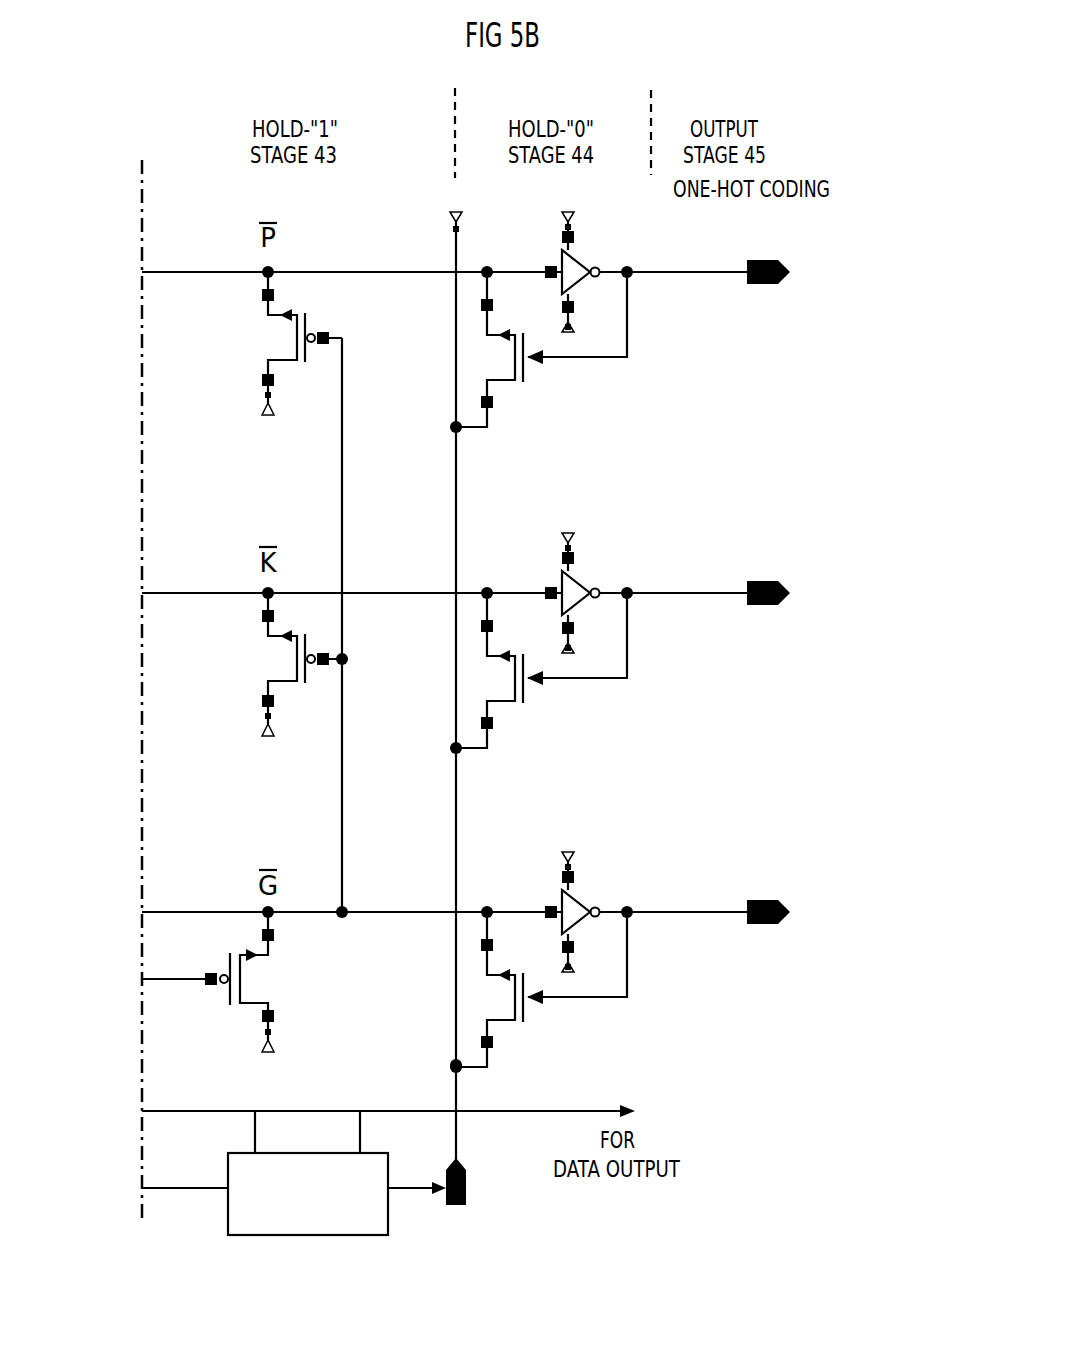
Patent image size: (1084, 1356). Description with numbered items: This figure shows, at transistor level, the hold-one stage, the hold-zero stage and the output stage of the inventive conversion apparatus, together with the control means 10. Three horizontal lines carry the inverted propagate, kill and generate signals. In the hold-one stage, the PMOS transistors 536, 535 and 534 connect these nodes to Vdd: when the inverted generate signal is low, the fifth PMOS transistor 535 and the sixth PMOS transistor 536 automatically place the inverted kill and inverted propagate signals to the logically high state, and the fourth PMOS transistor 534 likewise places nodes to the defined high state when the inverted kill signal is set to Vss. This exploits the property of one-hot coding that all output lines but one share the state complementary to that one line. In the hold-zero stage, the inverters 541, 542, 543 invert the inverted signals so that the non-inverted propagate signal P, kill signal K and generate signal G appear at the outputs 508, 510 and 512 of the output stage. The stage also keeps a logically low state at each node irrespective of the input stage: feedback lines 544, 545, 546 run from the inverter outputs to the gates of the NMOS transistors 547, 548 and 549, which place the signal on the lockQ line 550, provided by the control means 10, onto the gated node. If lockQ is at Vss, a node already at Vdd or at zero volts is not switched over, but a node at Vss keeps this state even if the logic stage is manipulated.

The control means 10 is at (312, 1235).
The output 508 is at (790, 272).
The output 510 is at (790, 593).
The output 512 is at (790, 912).
The fourth PMOS transistor 534 is at (250, 980).
The fifth PMOS transistor 535 is at (287, 657).
The sixth PMOS transistor 536 is at (287, 336).
The inverter 541 is at (576, 260).
The inverter 542 is at (576, 581).
The inverter 543 is at (576, 900).
The feedback line 544 is at (627, 332).
The feedback line 545 is at (627, 653).
The feedback line 546 is at (627, 972).
The NMOS transistor 547 is at (530, 380).
The NMOS transistor 548 is at (530, 701).
The NMOS transistor 549 is at (530, 1020).
The lockQ line 550 is at (467, 1198).